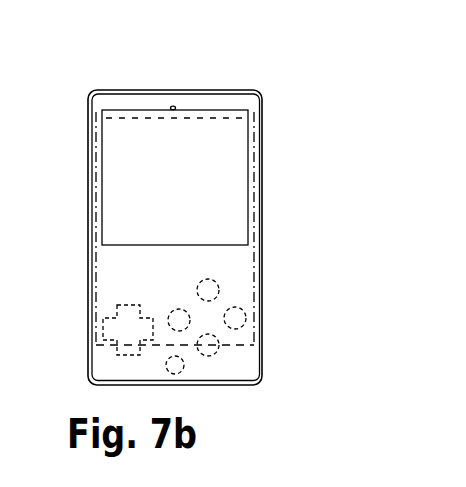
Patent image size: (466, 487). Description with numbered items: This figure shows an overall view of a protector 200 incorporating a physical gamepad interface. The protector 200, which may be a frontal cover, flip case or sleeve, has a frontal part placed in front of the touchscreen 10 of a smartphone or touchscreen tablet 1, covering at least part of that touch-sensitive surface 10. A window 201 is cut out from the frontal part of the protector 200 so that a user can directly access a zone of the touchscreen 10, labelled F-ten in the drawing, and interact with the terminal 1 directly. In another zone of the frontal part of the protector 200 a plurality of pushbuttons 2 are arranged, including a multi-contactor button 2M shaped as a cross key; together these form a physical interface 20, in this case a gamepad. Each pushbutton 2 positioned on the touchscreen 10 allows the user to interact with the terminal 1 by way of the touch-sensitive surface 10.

The terminal 1 is at (268, 322).
The touch-sensitive surface 10 is at (264, 254).
The protector 200 is at (0, 178).
The window 201 is at (222, 98).
The physical interface 20 is at (75, 268).
The multi-contactor button 2M is at (123, 300).
The pushbutton 2 is at (238, 331).